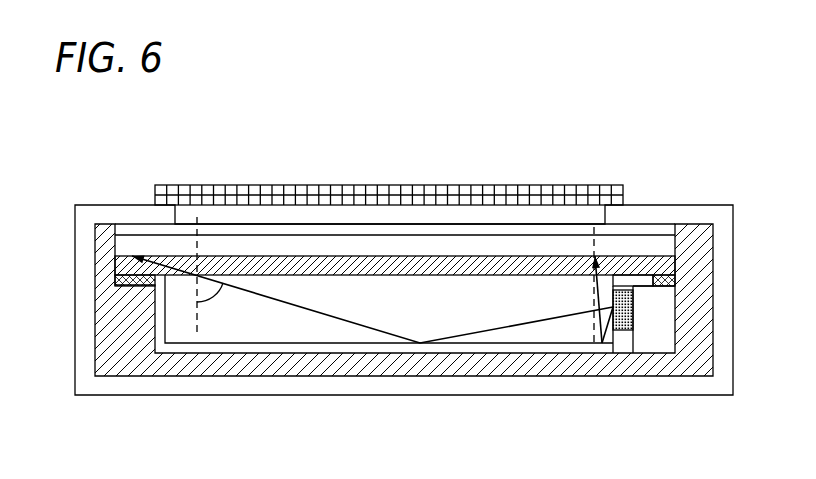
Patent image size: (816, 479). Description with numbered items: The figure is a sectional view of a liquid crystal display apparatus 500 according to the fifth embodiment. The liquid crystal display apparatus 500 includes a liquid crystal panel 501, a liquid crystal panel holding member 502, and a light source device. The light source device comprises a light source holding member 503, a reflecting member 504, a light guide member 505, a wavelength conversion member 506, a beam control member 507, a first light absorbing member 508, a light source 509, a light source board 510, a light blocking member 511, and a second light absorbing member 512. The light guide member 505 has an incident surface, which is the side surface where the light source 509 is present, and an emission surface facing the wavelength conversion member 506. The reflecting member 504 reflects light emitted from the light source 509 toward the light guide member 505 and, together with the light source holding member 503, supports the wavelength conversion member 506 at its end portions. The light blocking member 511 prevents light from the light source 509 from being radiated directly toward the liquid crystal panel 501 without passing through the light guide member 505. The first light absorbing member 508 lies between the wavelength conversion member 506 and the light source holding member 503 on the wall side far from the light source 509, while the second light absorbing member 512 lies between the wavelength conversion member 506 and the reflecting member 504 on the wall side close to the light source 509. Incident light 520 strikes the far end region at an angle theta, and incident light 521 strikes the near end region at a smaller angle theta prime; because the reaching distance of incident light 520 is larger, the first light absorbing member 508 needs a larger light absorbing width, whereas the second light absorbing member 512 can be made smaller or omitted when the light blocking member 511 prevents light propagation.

The liquid crystal display apparatus 500 is at (78, 402).
The liquid crystal panel 501 is at (188, 192).
The liquid crystal panel holding member 502 is at (723, 220).
The light source holding member 503 is at (175, 364).
The reflecting member 504 is at (653, 338).
The light guide member 505 is at (320, 325).
The wavelength conversion member 506 is at (518, 262).
The beam control member 507 is at (432, 232).
The first light absorbing member 508 is at (130, 283).
The light source 509 is at (627, 330).
The light source board 510 is at (255, 350).
The light blocking member 511 is at (633, 277).
The second light absorbing member 512 is at (670, 280).
The incident light 520 is at (305, 309).
The incident light 521 is at (597, 305).